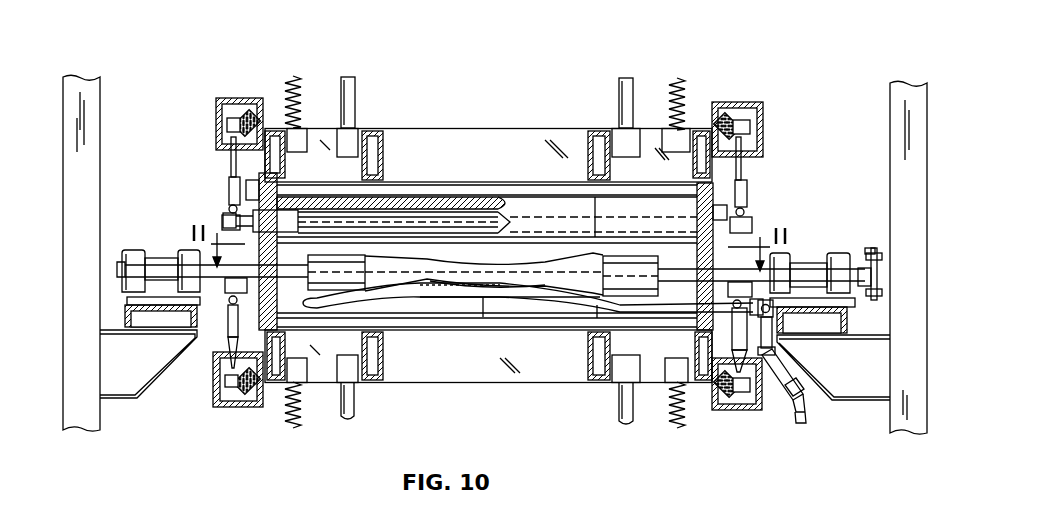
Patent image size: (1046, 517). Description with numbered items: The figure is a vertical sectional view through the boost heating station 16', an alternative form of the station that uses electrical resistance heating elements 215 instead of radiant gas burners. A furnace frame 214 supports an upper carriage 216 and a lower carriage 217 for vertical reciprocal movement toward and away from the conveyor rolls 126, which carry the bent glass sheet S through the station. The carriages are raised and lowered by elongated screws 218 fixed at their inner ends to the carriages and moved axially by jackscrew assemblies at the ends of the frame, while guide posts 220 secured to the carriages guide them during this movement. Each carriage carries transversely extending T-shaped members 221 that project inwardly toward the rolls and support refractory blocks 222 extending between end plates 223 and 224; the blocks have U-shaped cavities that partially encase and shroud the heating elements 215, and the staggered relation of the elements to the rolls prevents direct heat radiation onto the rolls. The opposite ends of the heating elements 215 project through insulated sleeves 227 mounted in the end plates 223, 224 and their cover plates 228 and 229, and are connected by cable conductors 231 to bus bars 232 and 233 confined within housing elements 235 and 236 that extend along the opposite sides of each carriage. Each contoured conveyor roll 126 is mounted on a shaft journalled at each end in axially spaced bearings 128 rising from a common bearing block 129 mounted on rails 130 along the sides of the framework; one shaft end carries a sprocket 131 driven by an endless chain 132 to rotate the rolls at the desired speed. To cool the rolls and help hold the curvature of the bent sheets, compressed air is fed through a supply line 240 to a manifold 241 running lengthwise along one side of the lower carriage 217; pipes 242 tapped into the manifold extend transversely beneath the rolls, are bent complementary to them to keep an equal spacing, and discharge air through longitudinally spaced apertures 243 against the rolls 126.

The boost heating station 16' is at (512, 69).
The conveyor roll 126 is at (652, 213).
The bearings 128 is at (180, 252).
The bearing block 129 is at (152, 300).
The rails 130 is at (138, 380).
The sprocket 131 is at (880, 290).
The endless chain 132 is at (868, 249).
The furnace frame 214 is at (107, 98).
The electrical resistance heating elements 215 is at (393, 222).
The upper carriage 216 is at (540, 126).
The lower carriage 217 is at (559, 391).
The elongated screws 218 is at (292, 76).
The guide posts 220 is at (352, 83).
The T-shaped members 221 is at (432, 186).
The blocks 222 is at (465, 200).
The end plate 223 is at (705, 203).
The end plate 224 is at (258, 198).
The insulated sleeves 227 is at (289, 218).
The cover plate 228 is at (720, 203).
The cover plate 229 is at (262, 183).
The cable conductors 231 is at (233, 175).
The bus bar 232 is at (741, 120).
The bus bar 233 is at (235, 112).
The housing element 235 is at (764, 110).
The housing element 236 is at (217, 107).
The supply line 240 is at (808, 414).
The manifold 241 is at (780, 312).
The pipes 242 is at (528, 293).
The apertures 243 is at (458, 290).
The specimen S is at (508, 265).